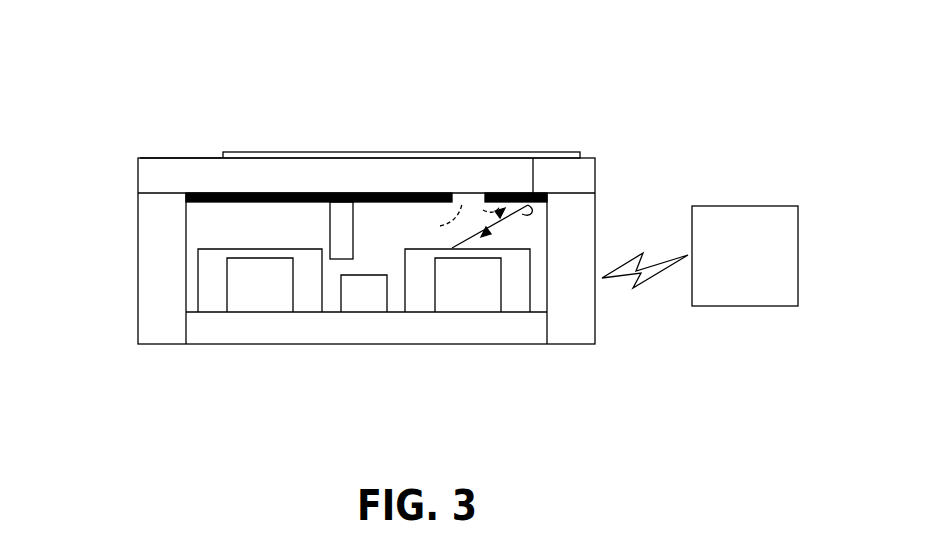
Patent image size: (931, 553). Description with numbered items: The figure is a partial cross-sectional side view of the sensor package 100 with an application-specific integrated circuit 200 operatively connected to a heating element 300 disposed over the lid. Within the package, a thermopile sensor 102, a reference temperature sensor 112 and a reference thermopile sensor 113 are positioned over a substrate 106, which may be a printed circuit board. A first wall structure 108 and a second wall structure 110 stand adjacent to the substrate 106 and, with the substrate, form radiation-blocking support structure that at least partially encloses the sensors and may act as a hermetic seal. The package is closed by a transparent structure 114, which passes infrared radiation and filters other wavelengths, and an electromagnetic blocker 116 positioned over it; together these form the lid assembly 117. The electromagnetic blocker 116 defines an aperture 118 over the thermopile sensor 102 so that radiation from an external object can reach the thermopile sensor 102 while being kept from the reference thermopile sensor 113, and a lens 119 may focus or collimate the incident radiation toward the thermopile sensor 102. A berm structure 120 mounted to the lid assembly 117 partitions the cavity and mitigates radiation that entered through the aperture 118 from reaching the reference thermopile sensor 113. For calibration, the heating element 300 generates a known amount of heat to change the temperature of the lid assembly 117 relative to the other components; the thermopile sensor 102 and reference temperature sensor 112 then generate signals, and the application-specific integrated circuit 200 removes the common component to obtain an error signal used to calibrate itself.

The sensor package 100 is at (551, 81).
The thermopile sensor 102 is at (410, 298).
The substrate 106 is at (520, 330).
The first wall structure 108 is at (153, 305).
The second wall structure 110 is at (578, 327).
The reference temperature sensor 112 is at (345, 300).
The reference thermopile sensor 113 is at (290, 300).
The transparent structure 114 is at (150, 177).
The electromagnetic blocker 116 is at (327, 193).
The lid assembly 117 is at (180, 150).
The aperture 118 is at (447, 219).
The lens 119 is at (533, 158).
The berm structure 120 is at (353, 237).
The application-specific integrated circuit 200 is at (765, 192).
The heating element 300 is at (520, 152).